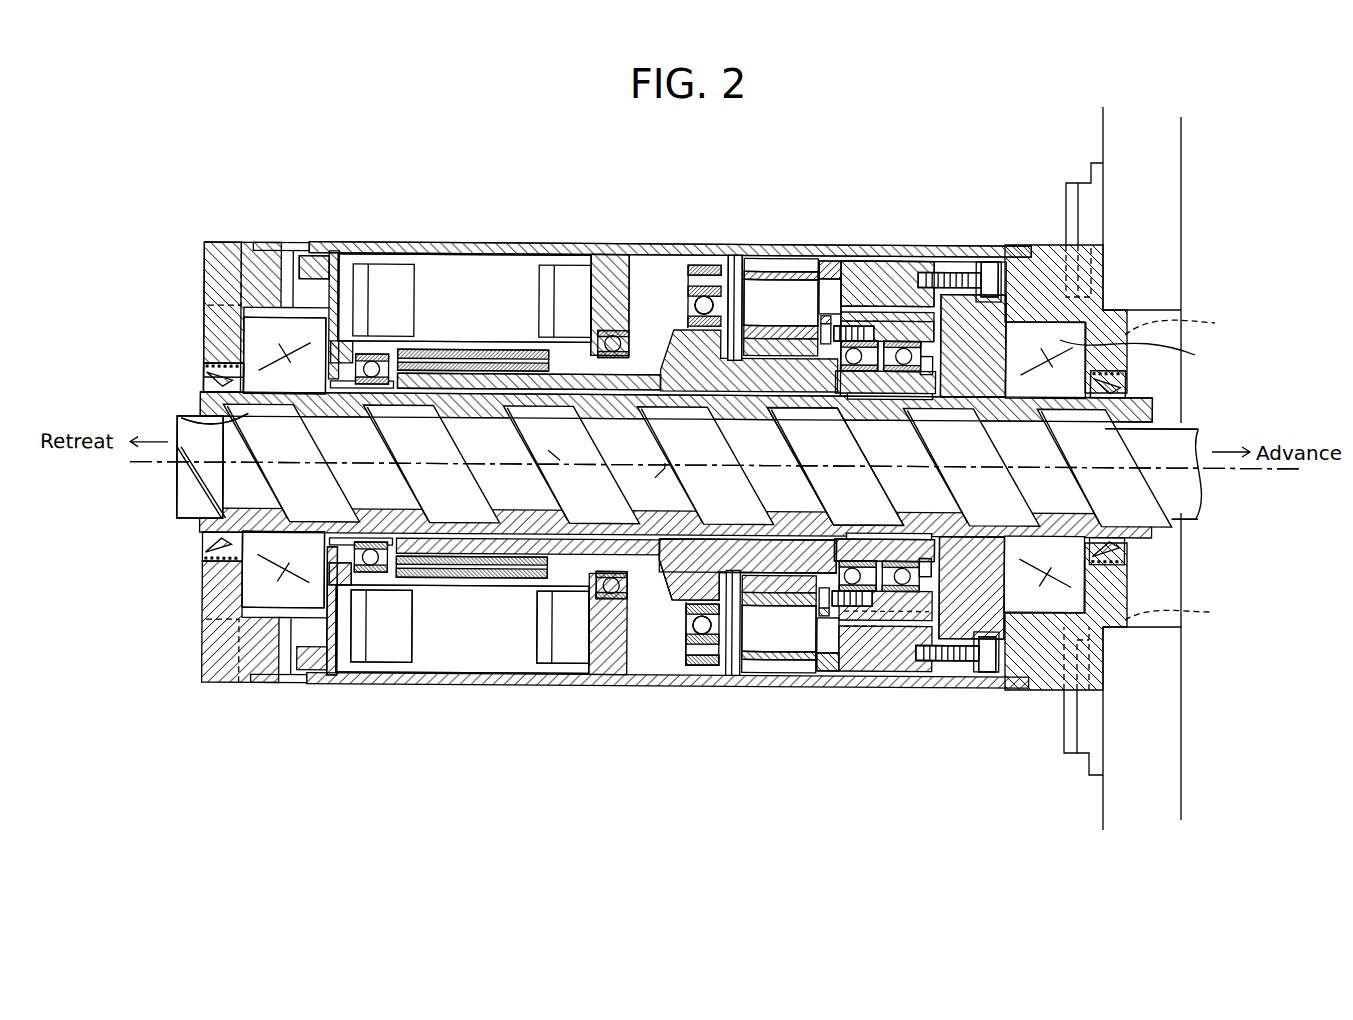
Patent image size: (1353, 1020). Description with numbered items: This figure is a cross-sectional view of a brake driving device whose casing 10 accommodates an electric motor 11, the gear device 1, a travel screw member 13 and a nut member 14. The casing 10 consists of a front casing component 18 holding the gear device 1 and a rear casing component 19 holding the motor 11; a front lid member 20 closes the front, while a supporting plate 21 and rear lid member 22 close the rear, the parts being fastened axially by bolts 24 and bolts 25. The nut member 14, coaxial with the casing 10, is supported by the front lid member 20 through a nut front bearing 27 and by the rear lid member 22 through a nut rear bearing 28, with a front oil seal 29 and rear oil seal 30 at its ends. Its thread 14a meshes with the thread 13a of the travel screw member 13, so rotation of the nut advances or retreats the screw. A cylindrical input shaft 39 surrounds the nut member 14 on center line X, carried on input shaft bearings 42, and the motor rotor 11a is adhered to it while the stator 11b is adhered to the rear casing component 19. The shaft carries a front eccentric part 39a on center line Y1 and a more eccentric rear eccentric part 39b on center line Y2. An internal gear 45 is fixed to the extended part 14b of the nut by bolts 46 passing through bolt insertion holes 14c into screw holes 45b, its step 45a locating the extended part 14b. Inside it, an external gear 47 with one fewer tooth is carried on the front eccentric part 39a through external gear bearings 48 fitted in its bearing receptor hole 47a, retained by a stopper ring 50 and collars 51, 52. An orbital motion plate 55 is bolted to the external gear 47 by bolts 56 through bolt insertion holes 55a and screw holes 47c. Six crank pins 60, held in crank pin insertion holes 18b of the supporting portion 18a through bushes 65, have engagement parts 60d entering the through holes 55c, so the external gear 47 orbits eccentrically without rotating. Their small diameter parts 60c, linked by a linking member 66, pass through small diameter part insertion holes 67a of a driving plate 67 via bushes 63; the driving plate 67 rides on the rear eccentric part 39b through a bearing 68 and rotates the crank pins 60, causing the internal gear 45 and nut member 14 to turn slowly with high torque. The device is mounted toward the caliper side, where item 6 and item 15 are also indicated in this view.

The gear device 1 is at (378, 214).
The frame 6 is at (1105, 800).
The casing 10 is at (650, 238).
The electric motor 11 is at (392, 748).
The rotor 11a is at (430, 600).
The stator 11b is at (480, 660).
The travel screw member 13 is at (170, 498).
The thread 13a is at (180, 520).
The nut member 14 is at (200, 388).
The thread 14a is at (235, 426).
The extended part 14b is at (960, 300).
The bolt insertion holes 14c is at (990, 265).
The ball screw mechanism 15 is at (806, 250).
The front casing component 18 is at (893, 256).
The supporting portion 18a is at (720, 443).
The crank pin insertion holes 18b is at (810, 390).
The rear casing component 19 is at (503, 240).
The front lid member 20 is at (1030, 245).
The supporting plate 21 is at (289, 240).
The rear lid member 22 is at (222, 240).
The bolts 24 is at (1187, 468).
The bolts 25 is at (240, 305).
The nut front bearing 27 is at (1147, 358).
The nut rear bearing 28 is at (258, 600).
The front oil seal 29 is at (1120, 378).
The rear oil seal 30 is at (210, 368).
The input shaft 39 is at (645, 588).
The front eccentric part 39a is at (918, 390).
The rear eccentric part 39b is at (570, 390).
The input shaft bearings 42 is at (590, 538).
The internal gear 45 is at (958, 690).
The step 45a is at (945, 680).
The screw holes 45b is at (950, 268).
The bolts 46 is at (1040, 263).
The external gear 47 is at (872, 682).
The bearing receptor hole 47a is at (945, 545).
The screw holes 47c is at (935, 329).
The external gear bearings 48 is at (850, 545).
The stopper ring 50 is at (973, 346).
The collar 51 is at (752, 545).
The collar 52 is at (925, 588).
The orbital motion plate 55 is at (830, 258).
The bolt insertion holes 55a is at (858, 393).
The through holes 55c is at (845, 270).
The bolts 56 is at (833, 325).
The crank pins 60 is at (752, 258).
The small diameter part 60c is at (690, 270).
The engagement part 60d is at (850, 303).
The bush 63 is at (700, 262).
The bush 65 is at (790, 262).
The linking member 66 is at (732, 255).
The driving plate 67 is at (728, 650).
The small diameter part insertion holes 67a is at (695, 288).
The bearing 68 is at (705, 548).
The center line X is at (1240, 466).
The center line Y1 is at (539, 441).
The center line Y2 is at (646, 485).